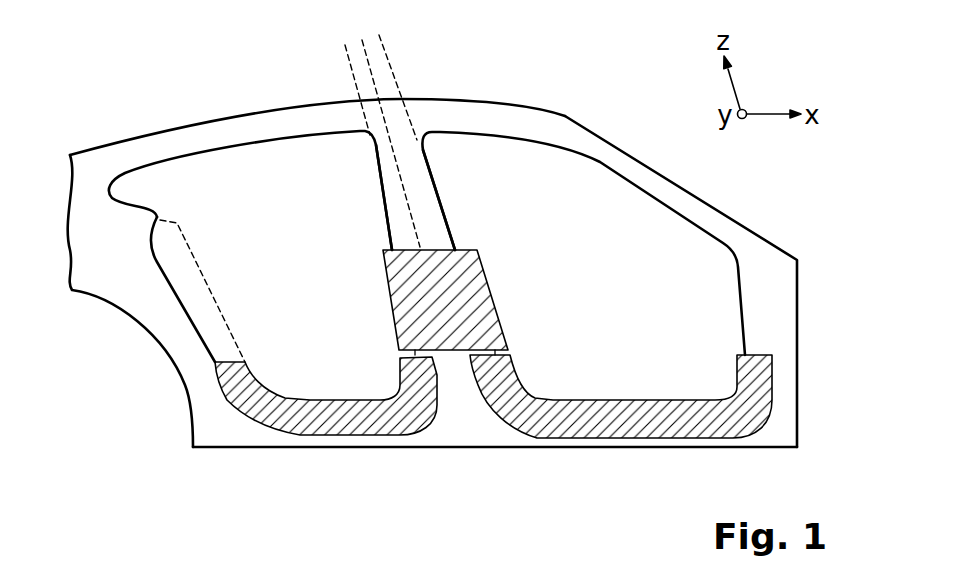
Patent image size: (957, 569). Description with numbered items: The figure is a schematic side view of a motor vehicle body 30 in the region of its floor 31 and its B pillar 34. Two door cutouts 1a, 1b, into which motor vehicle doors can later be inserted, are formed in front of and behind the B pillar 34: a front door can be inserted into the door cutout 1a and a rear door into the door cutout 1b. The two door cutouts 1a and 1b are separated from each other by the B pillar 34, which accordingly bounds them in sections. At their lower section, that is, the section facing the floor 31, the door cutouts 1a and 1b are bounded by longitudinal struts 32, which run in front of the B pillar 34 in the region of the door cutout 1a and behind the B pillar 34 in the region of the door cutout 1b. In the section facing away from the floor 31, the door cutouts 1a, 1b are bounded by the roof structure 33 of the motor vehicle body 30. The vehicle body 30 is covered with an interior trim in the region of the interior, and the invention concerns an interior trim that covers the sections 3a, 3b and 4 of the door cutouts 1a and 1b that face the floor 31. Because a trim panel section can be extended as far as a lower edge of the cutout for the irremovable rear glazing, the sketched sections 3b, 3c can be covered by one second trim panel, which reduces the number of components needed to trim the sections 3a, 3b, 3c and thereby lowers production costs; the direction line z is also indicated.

The motor vehicle body 30 is at (507, 73).
The floor 31 is at (462, 471).
The longitudinal struts 32 is at (493, 441).
The roof structure 33 is at (192, 140).
The B pillar 34 is at (420, 190).
The section of the door cutouts 4 is at (473, 298).
The door cutout 1a is at (606, 222).
The door cutout 1b is at (278, 207).
The section of the door cutouts 3a is at (603, 425).
The section of the door cutouts 3b is at (338, 423).
The section of the door cutouts 3c is at (197, 292).
The vertical direction line z is at (369, 64).